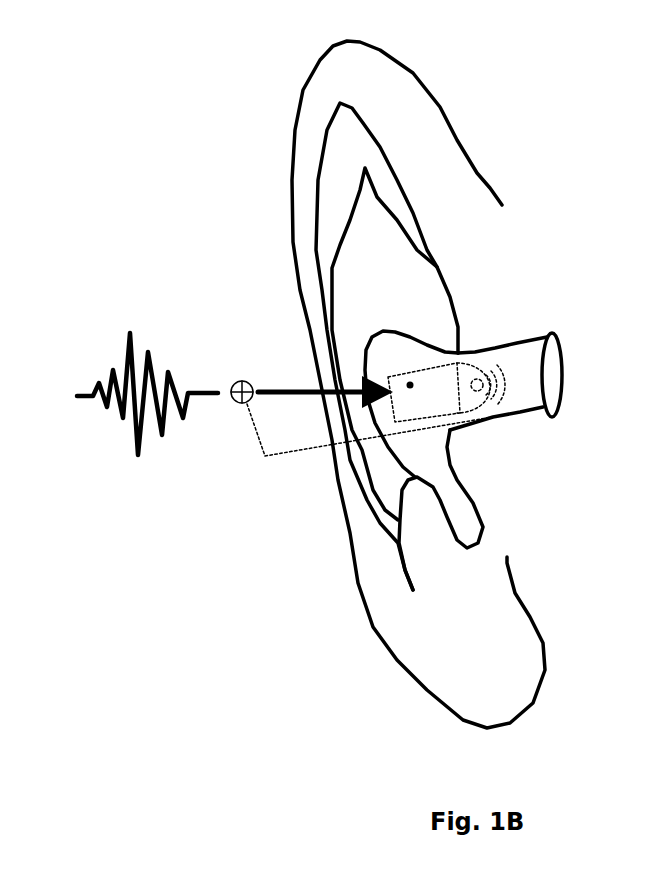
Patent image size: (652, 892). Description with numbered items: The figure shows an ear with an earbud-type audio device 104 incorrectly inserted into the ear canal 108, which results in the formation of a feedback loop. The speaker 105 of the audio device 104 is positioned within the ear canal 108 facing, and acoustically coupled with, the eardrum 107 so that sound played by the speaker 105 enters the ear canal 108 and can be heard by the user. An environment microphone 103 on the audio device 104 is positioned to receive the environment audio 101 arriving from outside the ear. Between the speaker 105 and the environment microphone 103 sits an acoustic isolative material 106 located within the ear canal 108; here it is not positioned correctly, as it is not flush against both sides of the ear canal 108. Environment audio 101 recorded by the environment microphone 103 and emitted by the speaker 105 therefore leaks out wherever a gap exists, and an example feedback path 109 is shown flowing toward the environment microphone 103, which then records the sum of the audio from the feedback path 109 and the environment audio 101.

The environment audio 101 is at (158, 338).
The environment microphone 103 is at (386, 375).
The audio device 104 is at (417, 437).
The speaker 105 is at (477, 350).
The acoustic isolative material 106 is at (476, 428).
The eardrum 107 is at (565, 362).
The ear canal 108 is at (517, 337).
The feedback path 109 is at (440, 433).